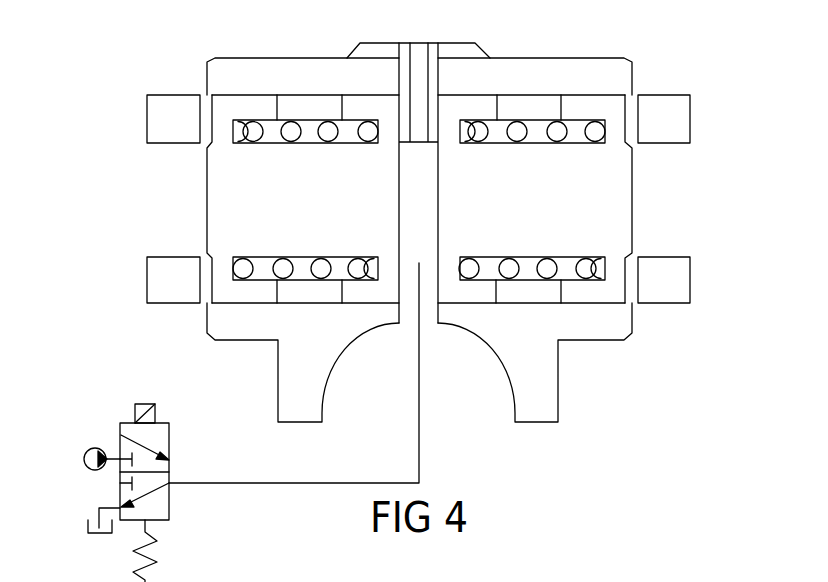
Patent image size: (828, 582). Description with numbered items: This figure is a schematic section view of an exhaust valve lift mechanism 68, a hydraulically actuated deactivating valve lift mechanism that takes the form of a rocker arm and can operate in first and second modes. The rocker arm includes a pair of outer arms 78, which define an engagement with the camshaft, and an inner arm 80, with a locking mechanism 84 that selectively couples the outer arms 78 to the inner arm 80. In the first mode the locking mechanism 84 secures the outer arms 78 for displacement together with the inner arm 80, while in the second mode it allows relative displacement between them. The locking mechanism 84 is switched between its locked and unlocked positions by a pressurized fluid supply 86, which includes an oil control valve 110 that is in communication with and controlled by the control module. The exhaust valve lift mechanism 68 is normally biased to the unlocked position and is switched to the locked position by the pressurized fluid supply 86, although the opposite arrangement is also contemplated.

The exhaust valve lift mechanism 68 is at (152, 72).
The locking mechanism 84 is at (180, 182).
The outer arms 78 is at (173, 303).
The inner arm 80 is at (248, 342).
The pressurized fluid supply 86 is at (114, 410).
The oil control valve 110 is at (169, 505).